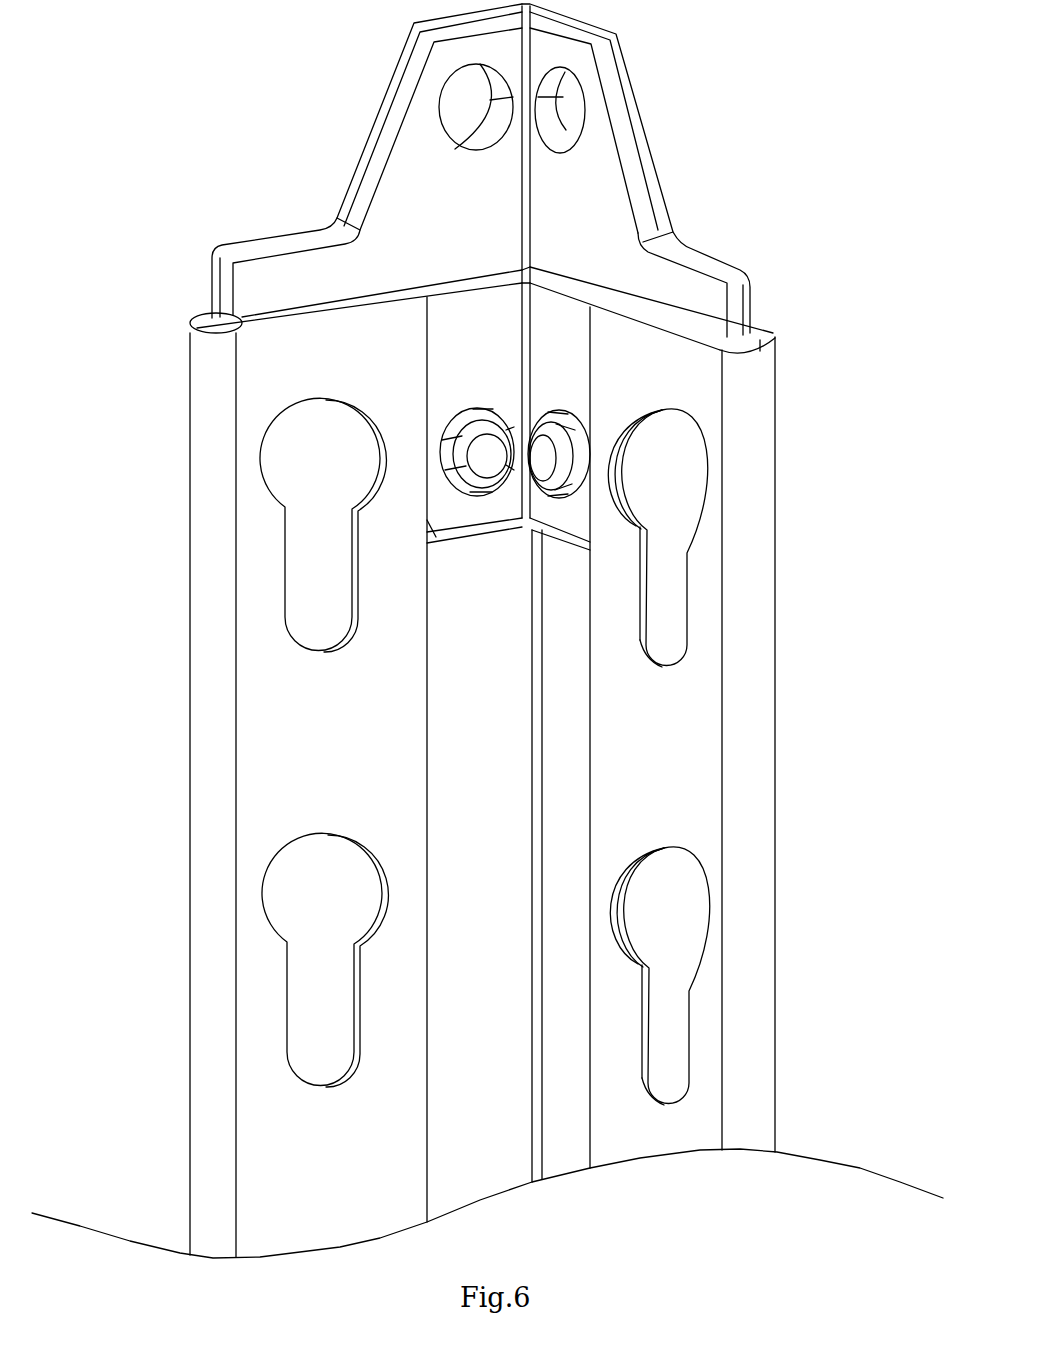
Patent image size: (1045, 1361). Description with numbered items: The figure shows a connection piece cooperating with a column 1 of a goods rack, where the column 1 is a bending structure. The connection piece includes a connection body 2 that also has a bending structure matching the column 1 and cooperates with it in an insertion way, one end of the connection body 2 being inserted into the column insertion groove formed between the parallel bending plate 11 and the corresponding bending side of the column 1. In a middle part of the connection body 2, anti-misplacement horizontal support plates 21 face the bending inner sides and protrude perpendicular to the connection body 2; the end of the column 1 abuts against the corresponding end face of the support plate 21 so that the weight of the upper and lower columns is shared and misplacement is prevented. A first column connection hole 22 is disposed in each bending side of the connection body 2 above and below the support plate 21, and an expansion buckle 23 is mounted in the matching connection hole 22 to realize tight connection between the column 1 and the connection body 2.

The column 1 is at (487, 762).
The parallel bending plate 11 is at (308, 350).
The connection body 2 is at (552, 277).
The anti-misplacement horizontal support plate 21 is at (627, 302).
The first column connection hole 22 is at (573, 108).
The expansion buckle 23 is at (528, 465).